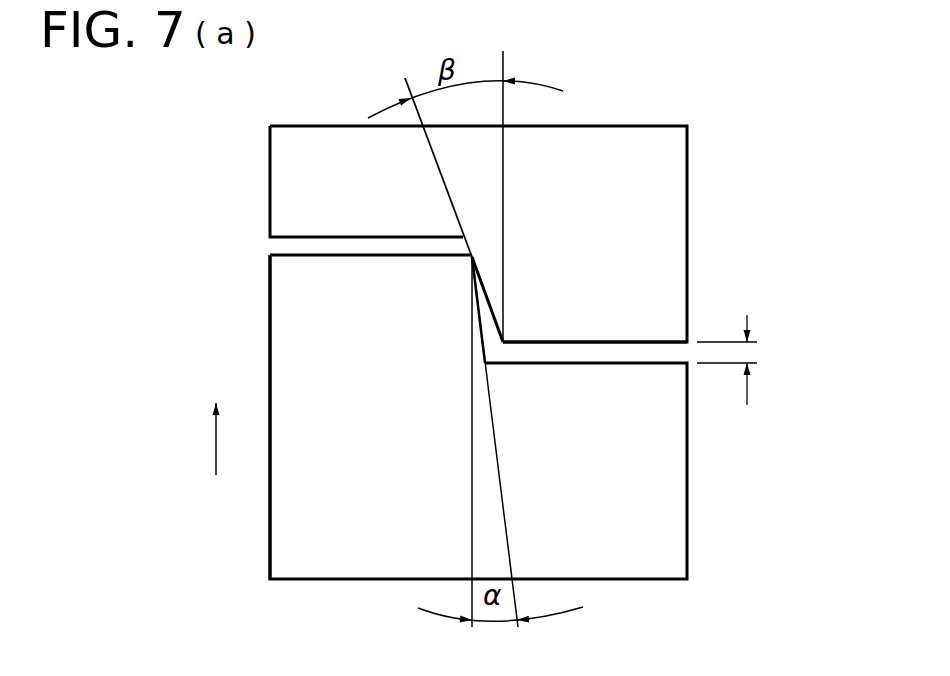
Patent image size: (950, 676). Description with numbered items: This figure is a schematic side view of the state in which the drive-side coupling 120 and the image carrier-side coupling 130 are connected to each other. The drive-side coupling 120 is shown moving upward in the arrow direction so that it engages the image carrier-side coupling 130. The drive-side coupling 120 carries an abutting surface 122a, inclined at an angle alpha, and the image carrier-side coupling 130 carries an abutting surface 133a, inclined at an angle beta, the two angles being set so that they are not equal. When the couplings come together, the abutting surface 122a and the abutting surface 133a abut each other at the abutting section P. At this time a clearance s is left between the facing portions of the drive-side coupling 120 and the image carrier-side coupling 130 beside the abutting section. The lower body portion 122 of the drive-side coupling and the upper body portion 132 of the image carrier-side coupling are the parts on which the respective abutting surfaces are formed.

The drive-side coupling 120 is at (672, 463).
The die 122 is at (285, 292).
The abutting surface 122a is at (487, 350).
The image carrier-side coupling 130 is at (680, 158).
The punch 132 is at (665, 310).
The abutting surface 133a is at (485, 302).
The abutting section P is at (476, 259).
The clearance s is at (738, 360).